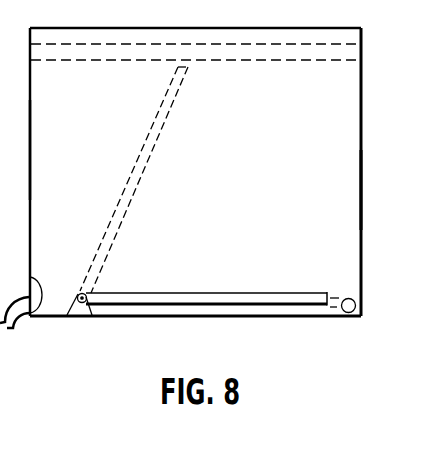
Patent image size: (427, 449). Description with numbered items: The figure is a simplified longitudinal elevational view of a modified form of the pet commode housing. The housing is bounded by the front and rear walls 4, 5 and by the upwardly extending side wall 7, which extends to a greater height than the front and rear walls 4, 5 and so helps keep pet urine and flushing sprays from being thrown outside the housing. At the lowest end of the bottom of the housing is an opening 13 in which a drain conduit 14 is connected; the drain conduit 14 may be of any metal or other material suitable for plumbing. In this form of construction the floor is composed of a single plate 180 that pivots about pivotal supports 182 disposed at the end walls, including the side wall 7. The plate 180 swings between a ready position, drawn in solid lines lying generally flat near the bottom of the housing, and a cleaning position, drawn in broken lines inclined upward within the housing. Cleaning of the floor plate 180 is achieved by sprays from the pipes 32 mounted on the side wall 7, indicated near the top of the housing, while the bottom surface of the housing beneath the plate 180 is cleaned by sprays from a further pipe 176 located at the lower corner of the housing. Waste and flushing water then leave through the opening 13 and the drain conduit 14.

The front wall 4 is at (29, 157).
The rear wall 5 is at (361, 188).
The side wall 7 is at (270, 145).
The opening 13 is at (29, 277).
The drain conduit 14 is at (7, 329).
The pipes 32 is at (248, 50).
The pipe 176 is at (349, 298).
The plate 180 is at (148, 160).
The pivotal supports 182 is at (80, 306).